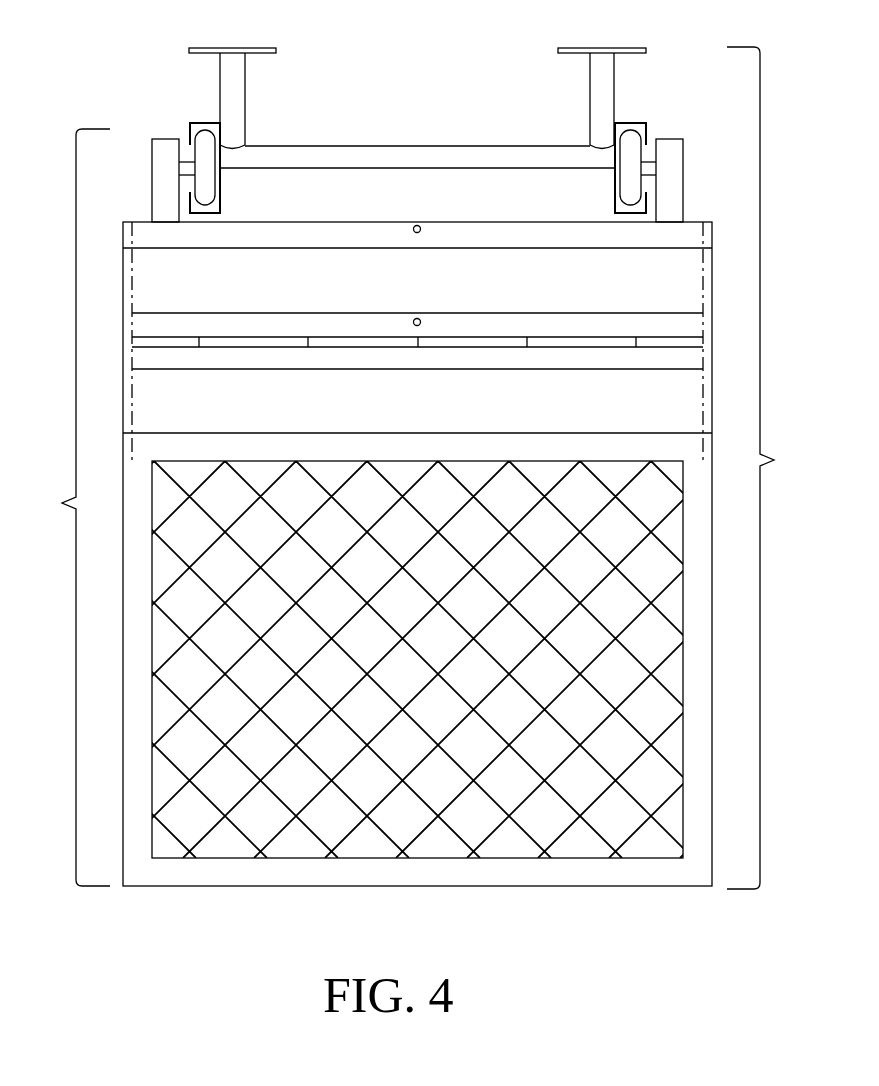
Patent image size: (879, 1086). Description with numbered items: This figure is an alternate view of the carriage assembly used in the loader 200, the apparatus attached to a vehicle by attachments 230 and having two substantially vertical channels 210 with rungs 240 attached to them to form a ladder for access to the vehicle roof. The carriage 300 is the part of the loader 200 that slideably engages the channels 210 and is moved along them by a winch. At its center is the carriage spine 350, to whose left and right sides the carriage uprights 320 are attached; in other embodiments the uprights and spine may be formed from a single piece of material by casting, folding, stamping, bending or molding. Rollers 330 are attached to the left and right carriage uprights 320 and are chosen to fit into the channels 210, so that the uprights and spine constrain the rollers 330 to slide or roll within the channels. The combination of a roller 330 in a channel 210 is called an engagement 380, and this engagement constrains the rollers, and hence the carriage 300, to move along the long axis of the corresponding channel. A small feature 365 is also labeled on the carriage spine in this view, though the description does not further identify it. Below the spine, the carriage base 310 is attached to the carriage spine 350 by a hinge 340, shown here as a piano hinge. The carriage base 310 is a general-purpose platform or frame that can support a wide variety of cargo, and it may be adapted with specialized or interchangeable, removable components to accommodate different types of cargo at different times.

The loader 200 is at (773, 468).
The channel 210 is at (207, 123).
The attachment 230 is at (259, 46).
The rung 240 is at (408, 153).
The carriage 300 is at (365, 507).
The carriage base 310 is at (406, 440).
The carriage upright 320 is at (160, 187).
The roller 330 is at (207, 185).
The hinge 340 is at (520, 320).
The carriage spine 350 is at (367, 240).
The pivot hole 365 is at (415, 225).
The engagement 380 is at (177, 130).